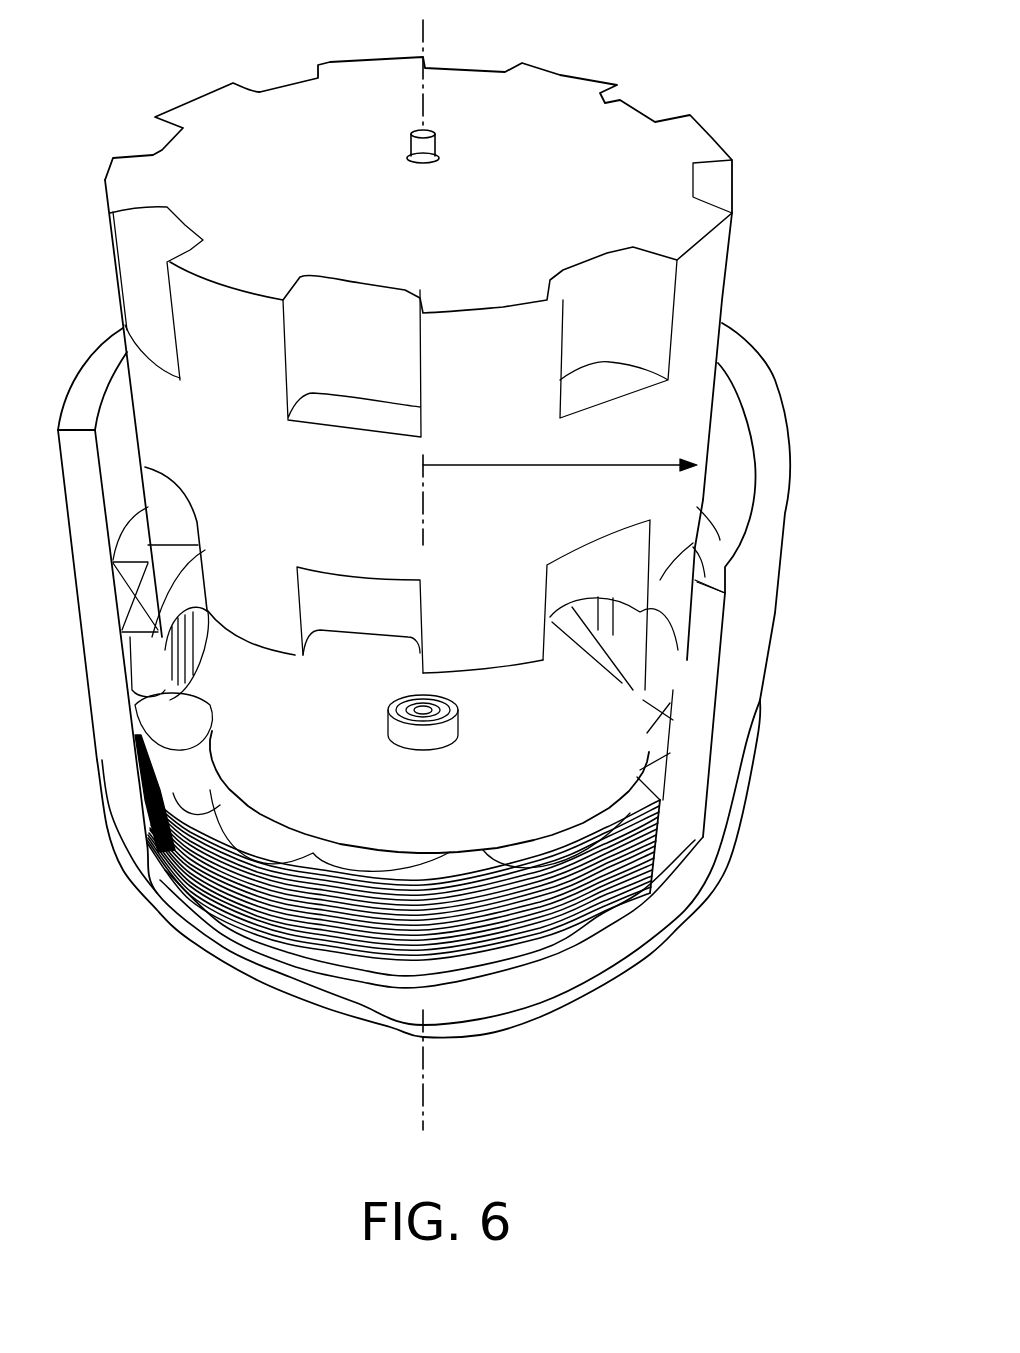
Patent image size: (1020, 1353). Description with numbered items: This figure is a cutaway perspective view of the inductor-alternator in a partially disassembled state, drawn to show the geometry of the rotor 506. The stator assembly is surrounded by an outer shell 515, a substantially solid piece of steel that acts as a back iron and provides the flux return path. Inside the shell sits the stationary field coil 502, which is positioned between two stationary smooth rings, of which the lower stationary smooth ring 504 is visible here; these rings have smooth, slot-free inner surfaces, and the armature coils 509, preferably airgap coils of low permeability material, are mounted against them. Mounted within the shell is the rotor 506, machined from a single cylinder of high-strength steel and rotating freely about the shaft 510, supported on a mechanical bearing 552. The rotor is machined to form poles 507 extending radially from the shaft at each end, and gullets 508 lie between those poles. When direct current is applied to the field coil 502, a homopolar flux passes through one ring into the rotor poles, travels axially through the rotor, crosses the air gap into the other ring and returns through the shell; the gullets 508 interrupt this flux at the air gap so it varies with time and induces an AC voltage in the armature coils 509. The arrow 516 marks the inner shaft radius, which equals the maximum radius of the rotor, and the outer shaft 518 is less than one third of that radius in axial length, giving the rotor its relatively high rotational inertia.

The field coil 502 is at (673, 738).
The stationary smooth ring 504 is at (560, 940).
The rotor 506 is at (692, 140).
The poles 507 is at (482, 355).
The gullets 508 is at (590, 280).
The armature coils 509 is at (193, 727).
The shaft 510 is at (430, 130).
The outer shell 515 is at (766, 677).
The inner shaft radius 516 is at (587, 463).
The outer shaft 518 is at (440, 144).
The bearing 552 is at (453, 737).